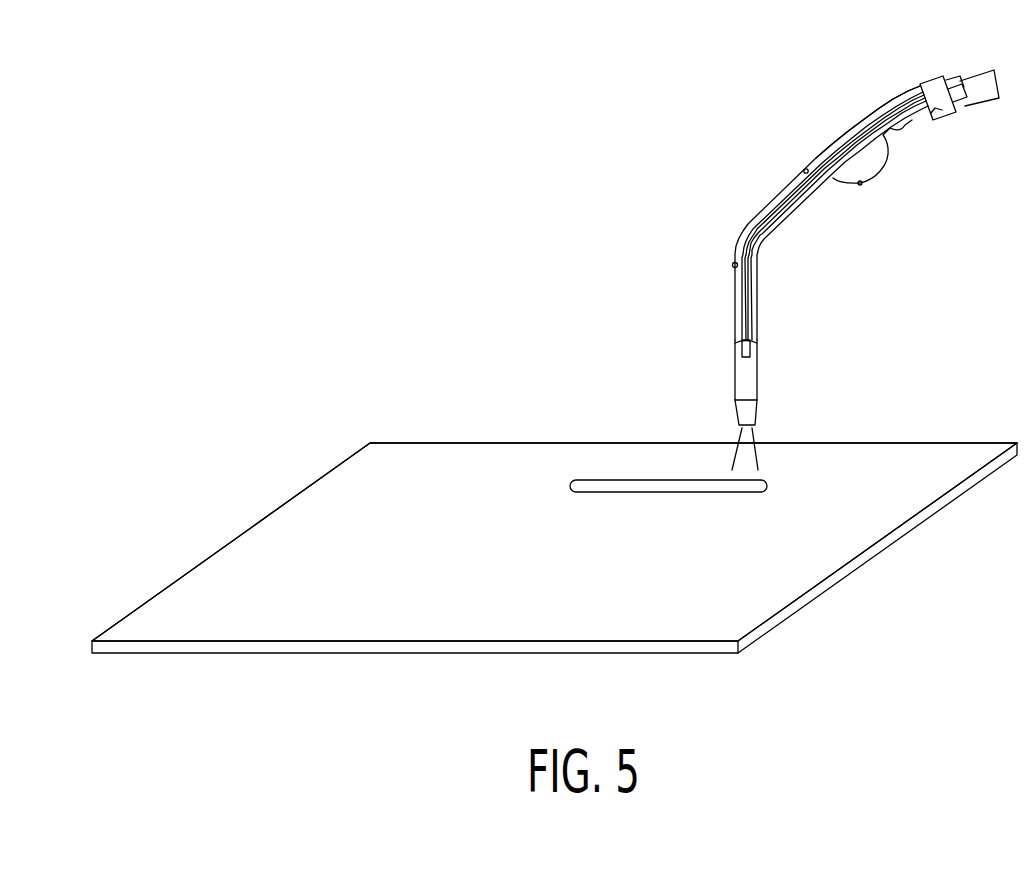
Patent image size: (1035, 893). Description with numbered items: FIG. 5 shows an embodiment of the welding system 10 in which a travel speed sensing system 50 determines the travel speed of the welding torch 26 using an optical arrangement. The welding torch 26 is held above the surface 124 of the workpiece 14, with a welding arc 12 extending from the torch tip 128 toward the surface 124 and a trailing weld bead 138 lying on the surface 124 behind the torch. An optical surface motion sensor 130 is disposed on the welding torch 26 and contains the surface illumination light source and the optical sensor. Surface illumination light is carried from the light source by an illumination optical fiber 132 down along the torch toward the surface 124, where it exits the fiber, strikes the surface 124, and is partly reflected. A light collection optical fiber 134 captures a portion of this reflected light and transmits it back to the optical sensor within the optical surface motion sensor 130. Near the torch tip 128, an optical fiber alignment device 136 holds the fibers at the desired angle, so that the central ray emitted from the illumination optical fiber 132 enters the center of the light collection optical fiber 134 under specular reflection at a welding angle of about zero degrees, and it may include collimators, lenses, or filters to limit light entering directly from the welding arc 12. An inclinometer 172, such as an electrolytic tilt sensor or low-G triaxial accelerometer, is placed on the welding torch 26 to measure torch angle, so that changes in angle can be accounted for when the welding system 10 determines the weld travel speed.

The welding system 10 is at (376, 236).
The welding arc 12 is at (750, 458).
The workpiece 14 is at (460, 630).
The welding torch 26 is at (888, 98).
The travel speed sensing system 50 is at (818, 225).
The surface 124 is at (885, 508).
The torch tip 128 is at (733, 375).
The optical surface motion sensor 130 is at (935, 116).
The illumination optical fiber 132 is at (783, 197).
The light collection optical fiber 134 is at (824, 177).
The optical fiber alignment device 136 is at (757, 348).
The weld bead 138 is at (612, 480).
The inclinometer 172 is at (733, 262).